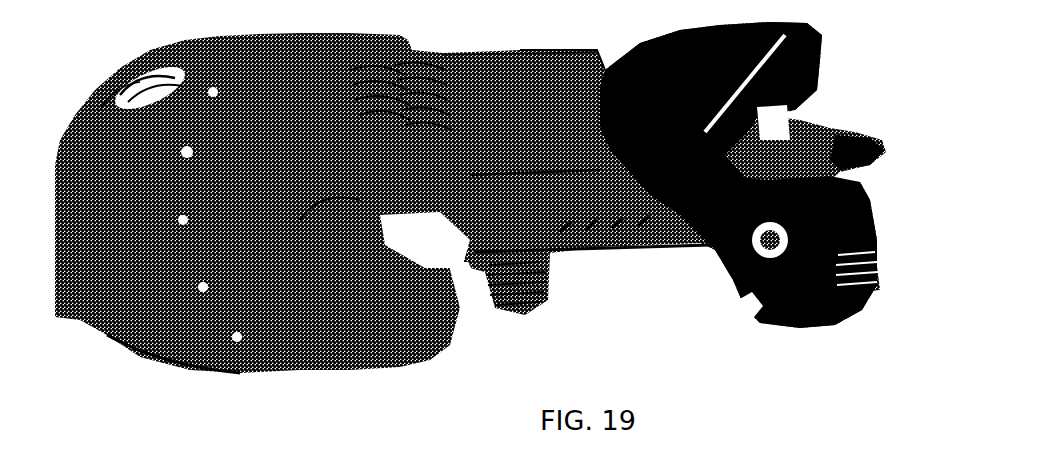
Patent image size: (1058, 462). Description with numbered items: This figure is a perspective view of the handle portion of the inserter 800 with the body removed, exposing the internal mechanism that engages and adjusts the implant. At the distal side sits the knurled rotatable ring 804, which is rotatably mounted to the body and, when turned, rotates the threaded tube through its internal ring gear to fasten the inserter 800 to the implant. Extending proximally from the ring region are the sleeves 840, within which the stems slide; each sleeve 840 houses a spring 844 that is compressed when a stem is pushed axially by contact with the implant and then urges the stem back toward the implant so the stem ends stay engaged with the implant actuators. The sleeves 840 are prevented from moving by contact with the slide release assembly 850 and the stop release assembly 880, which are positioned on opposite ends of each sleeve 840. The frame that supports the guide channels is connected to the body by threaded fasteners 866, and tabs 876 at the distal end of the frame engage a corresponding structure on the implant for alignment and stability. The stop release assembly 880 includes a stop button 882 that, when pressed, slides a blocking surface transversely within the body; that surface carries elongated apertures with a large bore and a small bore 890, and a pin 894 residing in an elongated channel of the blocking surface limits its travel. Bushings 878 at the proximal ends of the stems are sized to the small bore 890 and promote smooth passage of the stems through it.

The inserter 800 is at (202, 393).
The rotatable ring 804 is at (283, 358).
The sleeve 840 is at (550, 137).
The spring 844 is at (633, 213).
The slide release assembly 850 is at (465, 362).
The threaded fasteners 866 is at (527, 313).
The tabs 876 is at (855, 295).
The bushings 878 is at (888, 105).
The stop release assembly 880 is at (690, 294).
The stop button 882 is at (627, 63).
The small bore 890 is at (824, 86).
The pin 894 is at (749, 331).